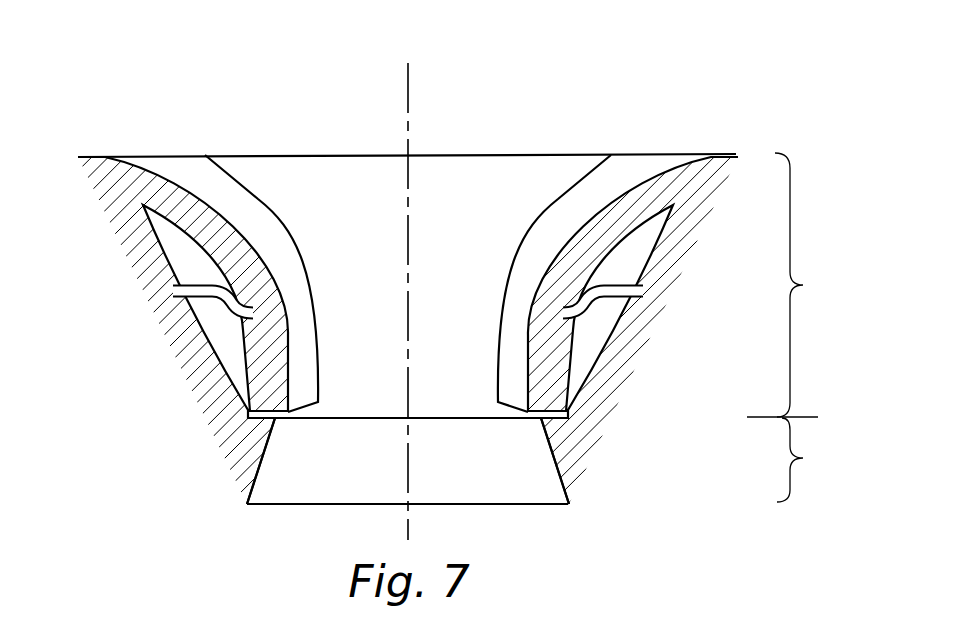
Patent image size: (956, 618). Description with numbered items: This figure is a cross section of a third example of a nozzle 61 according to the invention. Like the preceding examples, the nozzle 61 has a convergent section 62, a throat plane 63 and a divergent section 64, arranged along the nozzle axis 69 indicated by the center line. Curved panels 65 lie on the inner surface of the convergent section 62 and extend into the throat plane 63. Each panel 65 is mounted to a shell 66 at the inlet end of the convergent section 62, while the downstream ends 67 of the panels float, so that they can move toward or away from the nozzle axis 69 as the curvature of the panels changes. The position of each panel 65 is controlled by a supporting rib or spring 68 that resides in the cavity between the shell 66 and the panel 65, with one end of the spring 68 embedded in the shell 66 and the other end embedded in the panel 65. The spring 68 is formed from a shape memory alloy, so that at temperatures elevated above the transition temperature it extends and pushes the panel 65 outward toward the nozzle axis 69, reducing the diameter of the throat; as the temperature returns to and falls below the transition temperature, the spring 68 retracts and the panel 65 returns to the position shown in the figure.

The nozzle 61 is at (113, 77).
The convergent section 62 is at (809, 285).
The throat plane 63 is at (803, 415).
The divergent section 64 is at (811, 460).
The curved panels 65 is at (217, 207).
The shell 66 is at (147, 257).
The downstream ends 67 is at (250, 420).
The supporting rib or spring 68 is at (200, 297).
The nozzle axis 69 is at (408, 100).